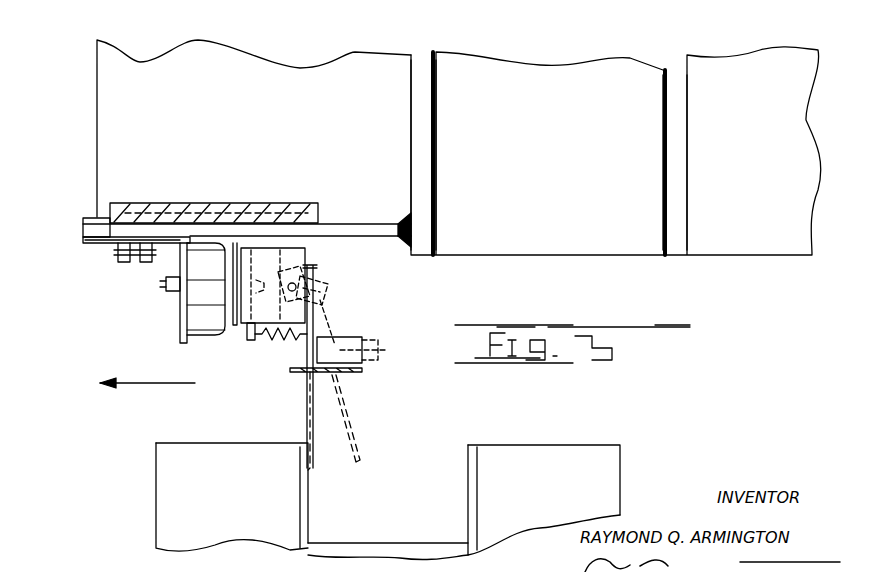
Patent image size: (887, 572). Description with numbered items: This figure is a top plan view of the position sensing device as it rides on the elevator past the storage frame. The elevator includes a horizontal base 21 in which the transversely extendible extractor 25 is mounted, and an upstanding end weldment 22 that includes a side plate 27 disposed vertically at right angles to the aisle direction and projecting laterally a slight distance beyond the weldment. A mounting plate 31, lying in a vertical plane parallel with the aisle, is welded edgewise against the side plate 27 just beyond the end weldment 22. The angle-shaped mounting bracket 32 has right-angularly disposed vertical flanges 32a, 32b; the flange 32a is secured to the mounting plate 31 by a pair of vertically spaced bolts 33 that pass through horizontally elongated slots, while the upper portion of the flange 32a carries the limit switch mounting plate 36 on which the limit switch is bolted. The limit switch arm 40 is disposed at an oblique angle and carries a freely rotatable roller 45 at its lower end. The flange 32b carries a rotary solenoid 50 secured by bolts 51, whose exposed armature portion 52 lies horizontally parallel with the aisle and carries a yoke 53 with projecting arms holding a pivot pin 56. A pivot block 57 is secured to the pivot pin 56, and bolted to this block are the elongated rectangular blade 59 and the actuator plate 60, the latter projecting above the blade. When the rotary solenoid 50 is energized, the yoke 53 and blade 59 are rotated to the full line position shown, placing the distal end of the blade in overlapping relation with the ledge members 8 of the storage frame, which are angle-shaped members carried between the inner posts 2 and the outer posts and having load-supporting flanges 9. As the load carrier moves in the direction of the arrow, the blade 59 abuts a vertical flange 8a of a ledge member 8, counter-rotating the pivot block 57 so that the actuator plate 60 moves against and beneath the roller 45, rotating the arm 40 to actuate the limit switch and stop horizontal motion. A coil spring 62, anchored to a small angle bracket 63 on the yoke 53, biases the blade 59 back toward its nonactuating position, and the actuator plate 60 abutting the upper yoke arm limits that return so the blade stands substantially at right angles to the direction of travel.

The end weldment 22 is at (97, 127).
The side plate 27 is at (411, 86).
The limit switch mounting plate 36 is at (306, 207).
The mounting plate 31 is at (374, 223).
The mounting bracket 32 is at (85, 240).
The flange 32a is at (97, 248).
The flange 32b is at (181, 333).
The bolts 33 is at (131, 262).
The bolts 51 is at (166, 288).
The rotary solenoid 50 is at (197, 307).
The armature portion 52 is at (234, 326).
The small angle bracket 63 is at (251, 341).
The coil spring 62 is at (277, 338).
The yoke 53 is at (296, 256).
The pivot pin 56 is at (300, 282).
The pivot block 57 is at (326, 294).
The actuator plate 60 is at (320, 336).
The roller 45 is at (360, 343).
The arm 40 is at (294, 376).
The blade 59 is at (307, 414).
The base 21 is at (552, 255).
The extractor 25 is at (762, 252).
The ledge member 8 is at (155, 443).
The flange 9 is at (160, 494).
The vertical flange 8a is at (300, 488).
The inner posts 2 is at (392, 546).